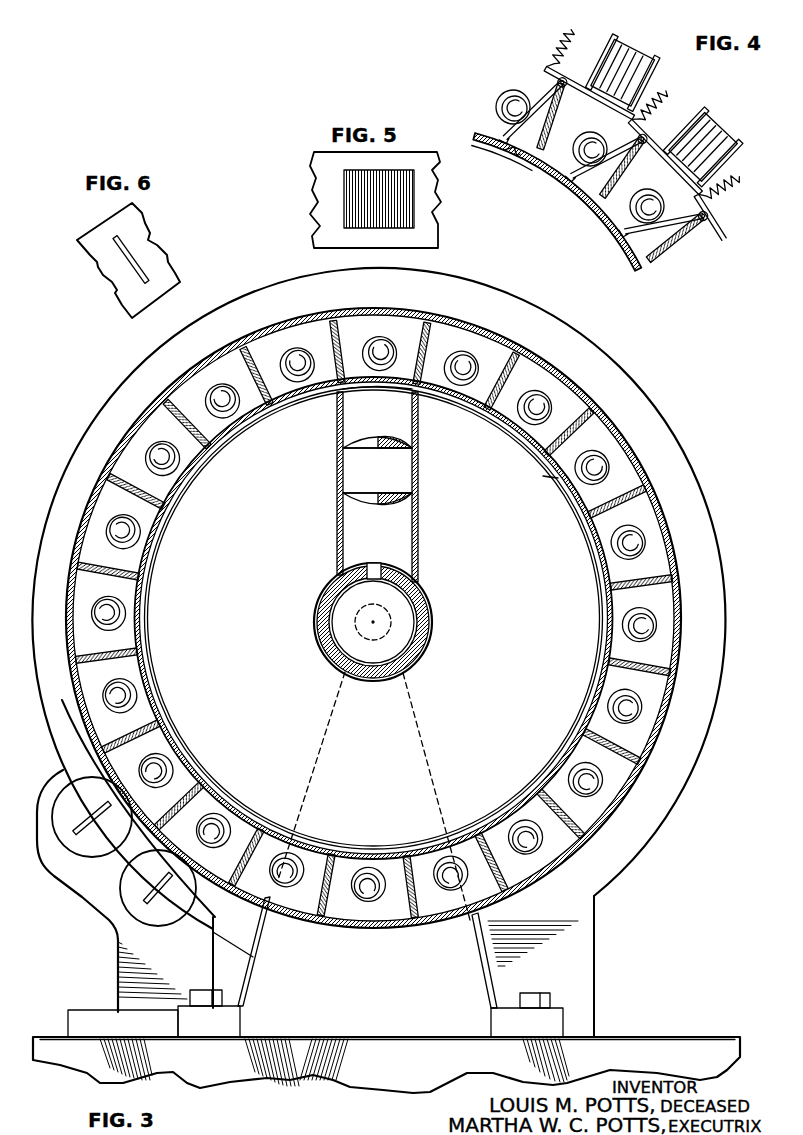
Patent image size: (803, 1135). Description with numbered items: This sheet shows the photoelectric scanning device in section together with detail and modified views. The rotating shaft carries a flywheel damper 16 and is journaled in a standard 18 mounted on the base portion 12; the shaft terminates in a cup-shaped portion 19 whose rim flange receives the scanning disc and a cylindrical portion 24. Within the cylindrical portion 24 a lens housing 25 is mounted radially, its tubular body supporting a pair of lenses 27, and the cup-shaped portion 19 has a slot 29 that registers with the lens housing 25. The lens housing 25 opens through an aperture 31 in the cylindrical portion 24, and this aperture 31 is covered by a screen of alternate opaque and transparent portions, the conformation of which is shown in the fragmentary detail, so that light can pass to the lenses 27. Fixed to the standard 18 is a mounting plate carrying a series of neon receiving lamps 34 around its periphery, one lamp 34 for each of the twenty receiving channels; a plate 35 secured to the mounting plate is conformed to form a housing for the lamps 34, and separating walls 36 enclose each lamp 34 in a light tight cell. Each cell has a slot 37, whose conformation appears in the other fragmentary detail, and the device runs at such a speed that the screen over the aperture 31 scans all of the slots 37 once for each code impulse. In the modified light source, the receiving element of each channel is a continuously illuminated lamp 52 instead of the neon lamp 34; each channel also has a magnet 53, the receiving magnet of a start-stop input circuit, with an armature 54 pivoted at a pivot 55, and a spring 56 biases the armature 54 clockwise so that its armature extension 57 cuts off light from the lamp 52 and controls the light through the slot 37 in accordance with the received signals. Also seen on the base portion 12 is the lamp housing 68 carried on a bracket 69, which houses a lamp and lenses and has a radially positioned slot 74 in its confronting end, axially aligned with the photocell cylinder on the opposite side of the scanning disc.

In FIG. 3, the base portion 12 is at (386, 1049).
In FIG. 3, the flywheel damper 16 is at (378, 652).
In FIG. 3, the standard 18 is at (378, 967).
In FIG. 3, the cup-shaped portion 19 is at (378, 741).
In FIG. 3, the cylindrical portion 24 is at (374, 618).
In FIG. 5, the cylindrical portion 24 is at (390, 200).
In FIG. 3, the lens housing 25 is at (353, 487).
In FIG. 3, the lenses 27 is at (403, 470).
In FIG. 3, the slot 29 is at (408, 559).
In FIG. 3, the aperture 31 is at (377, 406).
In FIG. 5, the aperture 31 is at (348, 199).
In FIG. 3, the neon receiving lamps 34 is at (374, 616).
In FIG. 3, the plate 35 is at (373, 607).
In FIG. 4, the plate 35 is at (557, 202).
In FIG. 6, the plate 35 is at (142, 260).
In FIG. 3, the separating walls 36 is at (384, 618).
In FIG. 4, the separating walls 36 is at (628, 173).
In FIG. 3, the slot 37 is at (528, 488).
In FIG. 4, the slot 37 is at (502, 162).
In FIG. 6, the slot 37 is at (103, 260).
In FIG. 4, the continuously illuminated lamp 52 is at (571, 144).
In FIG. 4, the magnet 53 is at (676, 110).
In FIG. 4, the armature 54 is at (630, 76).
In FIG. 4, the pivot 55 is at (612, 173).
In FIG. 4, the spring 56 is at (735, 190).
In FIG. 4, the armature extension 57 is at (523, 167).
In FIG. 3, the lamp housing 68 is at (114, 868).
In FIG. 3, the bracket 69 is at (135, 970).
In FIG. 3, the slot 74 is at (70, 817).